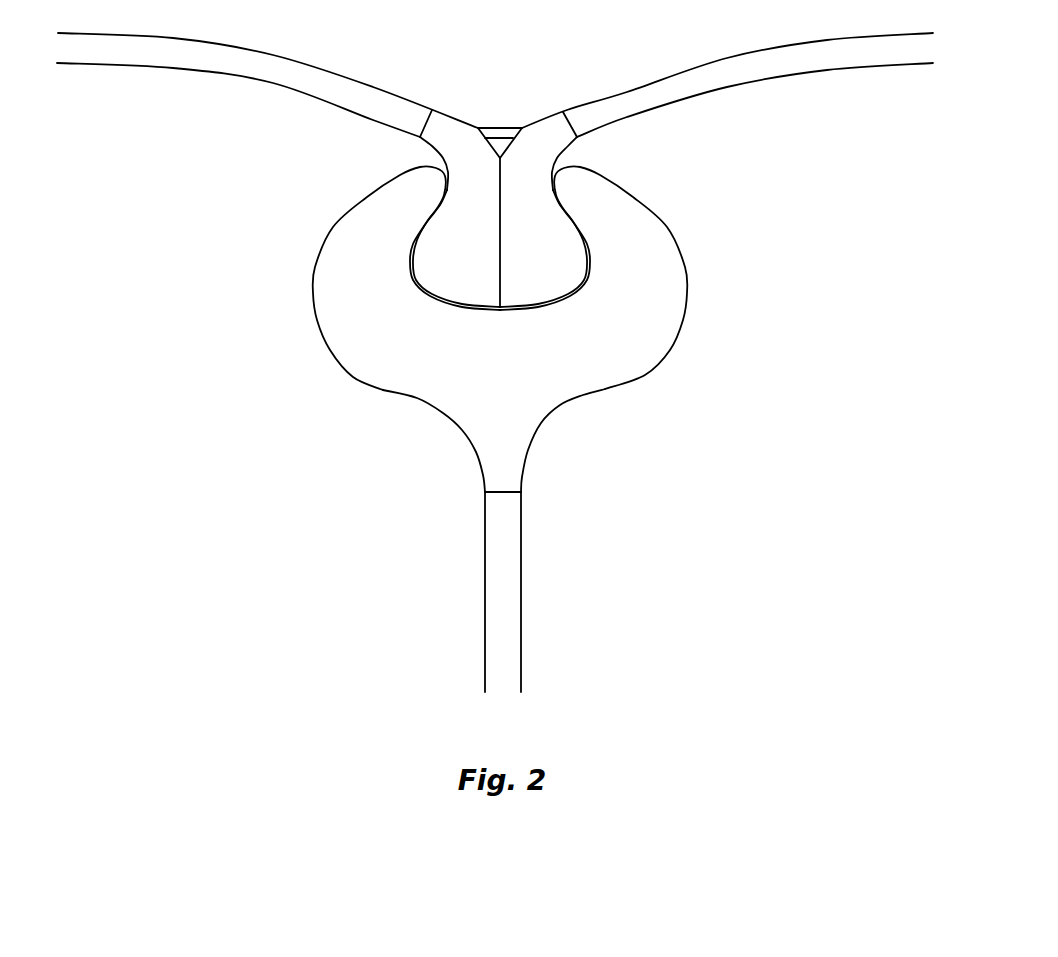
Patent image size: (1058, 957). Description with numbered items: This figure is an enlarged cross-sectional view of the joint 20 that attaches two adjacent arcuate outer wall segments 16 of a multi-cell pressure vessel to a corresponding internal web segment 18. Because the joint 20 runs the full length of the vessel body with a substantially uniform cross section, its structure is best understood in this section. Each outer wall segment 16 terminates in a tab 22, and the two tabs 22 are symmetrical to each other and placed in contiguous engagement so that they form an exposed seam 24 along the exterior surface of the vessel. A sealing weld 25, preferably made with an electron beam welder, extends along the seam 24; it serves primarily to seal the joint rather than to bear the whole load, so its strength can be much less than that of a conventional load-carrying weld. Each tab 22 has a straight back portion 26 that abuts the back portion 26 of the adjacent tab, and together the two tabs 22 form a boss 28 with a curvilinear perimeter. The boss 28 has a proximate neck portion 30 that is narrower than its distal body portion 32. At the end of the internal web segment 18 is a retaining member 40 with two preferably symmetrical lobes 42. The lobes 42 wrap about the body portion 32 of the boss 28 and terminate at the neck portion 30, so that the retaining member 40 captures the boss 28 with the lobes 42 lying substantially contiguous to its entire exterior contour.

The arcuate outer wall segment 16 is at (295, 82).
The internal web segment 18 is at (523, 590).
The joint 20 is at (711, 392).
The tab 22 is at (482, 289).
The exposed seam 24 is at (503, 153).
The sealing weld 25 is at (490, 126).
The back portion 26 is at (497, 218).
The boss 28 is at (488, 197).
The neck portion 30 is at (545, 169).
The body portion 32 is at (573, 267).
The retaining member 40 is at (522, 390).
The lobe 42 is at (334, 324).